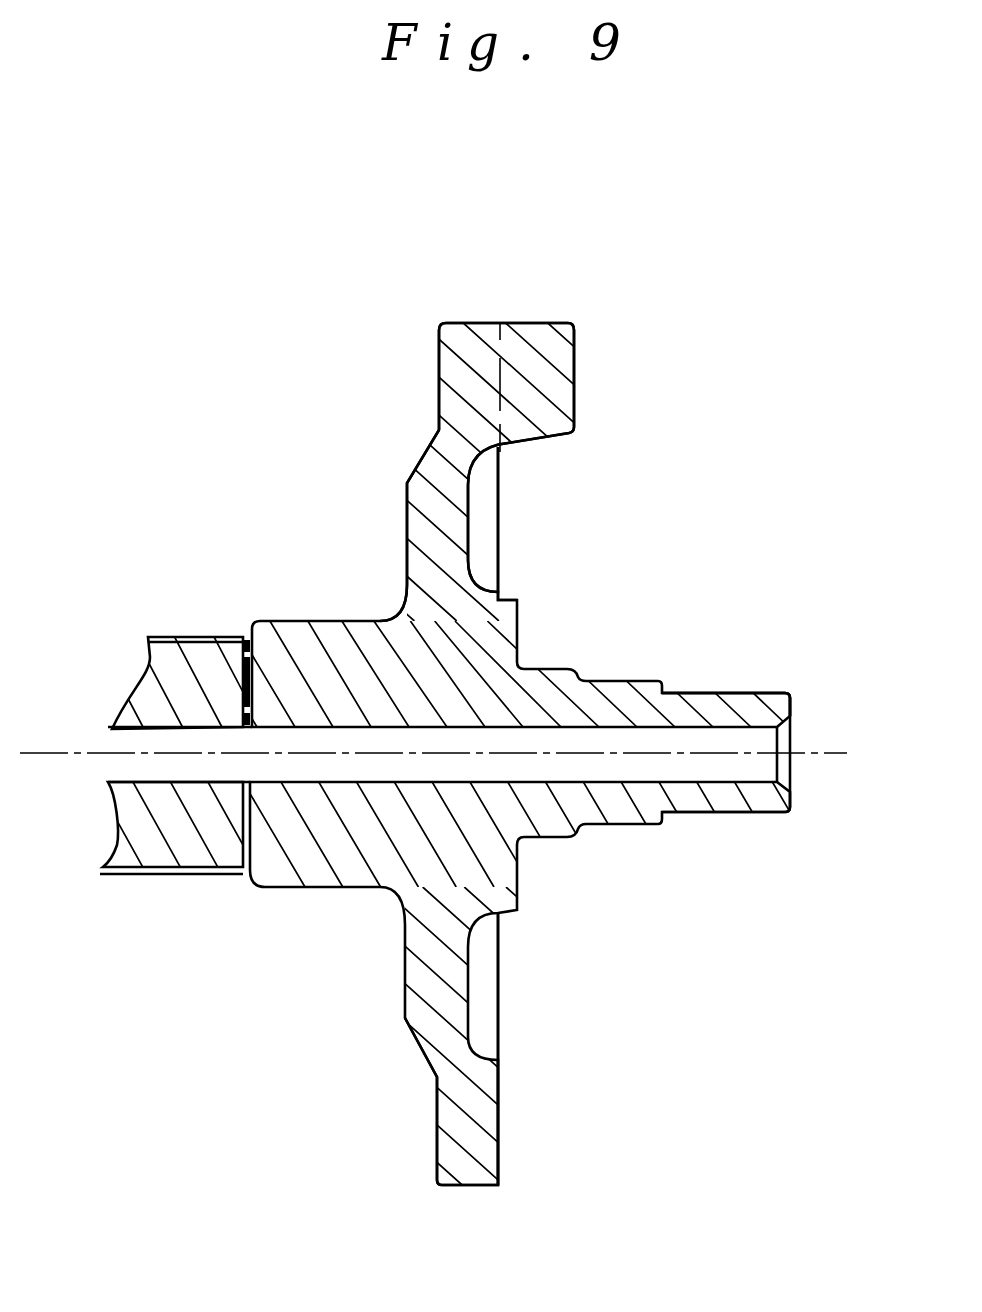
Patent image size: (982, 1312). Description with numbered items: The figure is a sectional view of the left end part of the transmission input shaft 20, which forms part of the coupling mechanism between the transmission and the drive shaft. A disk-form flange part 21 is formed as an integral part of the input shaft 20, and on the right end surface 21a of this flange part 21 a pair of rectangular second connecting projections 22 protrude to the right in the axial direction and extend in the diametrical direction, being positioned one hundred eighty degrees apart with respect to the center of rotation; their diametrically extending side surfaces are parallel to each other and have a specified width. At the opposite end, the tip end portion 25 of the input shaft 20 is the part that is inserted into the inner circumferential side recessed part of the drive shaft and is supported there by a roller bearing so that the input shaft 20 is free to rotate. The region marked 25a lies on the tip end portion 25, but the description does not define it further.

The transmission input shaft 20 is at (619, 266).
The flange part 21 is at (435, 462).
The right end surface 21a is at (498, 1095).
The second connecting projections 22 is at (552, 380).
The tip end portion 25 is at (732, 793).
The outer peripheral surface of shaft portion 25a is at (717, 692).